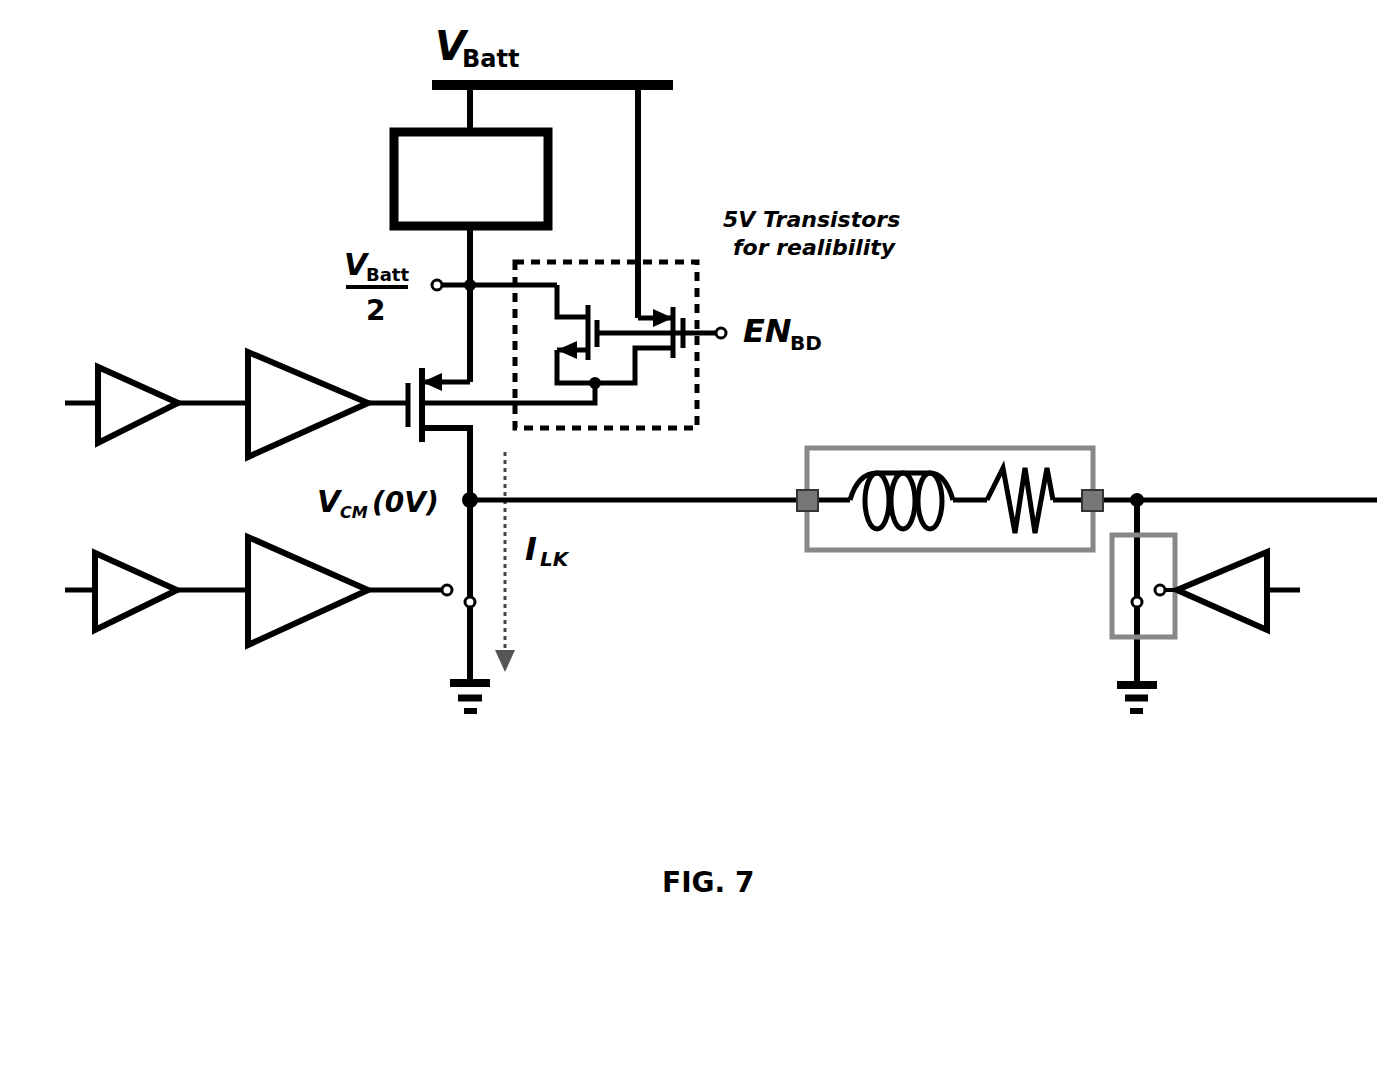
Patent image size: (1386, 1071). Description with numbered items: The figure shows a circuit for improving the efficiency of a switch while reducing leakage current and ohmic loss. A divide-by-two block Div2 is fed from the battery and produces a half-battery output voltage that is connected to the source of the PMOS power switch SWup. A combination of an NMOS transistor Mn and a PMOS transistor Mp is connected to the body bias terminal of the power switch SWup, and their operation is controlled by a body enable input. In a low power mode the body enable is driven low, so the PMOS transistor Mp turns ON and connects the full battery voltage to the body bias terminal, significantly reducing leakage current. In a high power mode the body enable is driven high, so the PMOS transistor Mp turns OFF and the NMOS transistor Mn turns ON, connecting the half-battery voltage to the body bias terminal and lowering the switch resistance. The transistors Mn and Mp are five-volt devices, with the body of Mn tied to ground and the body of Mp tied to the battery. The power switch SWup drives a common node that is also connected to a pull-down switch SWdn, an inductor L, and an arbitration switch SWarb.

The divide-by-two block Div2 is at (471, 179).
The NMOS transistor Mn is at (620, 326).
The PMOS transistor Mp is at (657, 350).
The PMOS power switch SWup is at (411, 434).
The pull-down switch SWdn is at (418, 617).
The arbitration switch SWarb is at (1151, 602).
The inductor with series resistance L is at (950, 513).